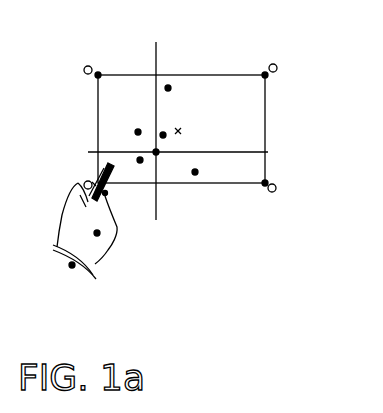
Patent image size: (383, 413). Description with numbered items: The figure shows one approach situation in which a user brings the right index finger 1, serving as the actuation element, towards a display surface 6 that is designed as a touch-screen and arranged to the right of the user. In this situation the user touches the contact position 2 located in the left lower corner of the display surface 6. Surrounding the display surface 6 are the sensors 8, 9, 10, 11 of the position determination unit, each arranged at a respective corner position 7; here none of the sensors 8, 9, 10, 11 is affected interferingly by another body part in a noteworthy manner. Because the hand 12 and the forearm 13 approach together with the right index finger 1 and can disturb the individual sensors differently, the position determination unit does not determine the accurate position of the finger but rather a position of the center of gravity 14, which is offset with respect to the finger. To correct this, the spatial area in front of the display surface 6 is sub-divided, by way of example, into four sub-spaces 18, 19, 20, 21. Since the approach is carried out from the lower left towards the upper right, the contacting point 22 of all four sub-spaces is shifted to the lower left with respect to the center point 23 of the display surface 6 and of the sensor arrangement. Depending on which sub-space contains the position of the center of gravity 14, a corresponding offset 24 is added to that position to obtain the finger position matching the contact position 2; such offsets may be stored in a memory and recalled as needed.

The right index finger 1 is at (105, 193).
The contact position 2 is at (110, 165).
The display surface 6 is at (168, 88).
The corner positions 7 is at (98, 75).
The sensor 8 is at (85, 183).
The sensor 9 is at (85, 67).
The sensor 10 is at (277, 66).
The sensor 11 is at (276, 191).
The hand 12 is at (97, 233).
The forearm 13 is at (72, 265).
The position of the center of gravity 14 is at (82, 200).
The sub-space 18 is at (140, 160).
The sub-space 19 is at (138, 132).
The sub-space 20 is at (163, 135).
The sub-space 21 is at (195, 172).
The contacting point 22 is at (156, 152).
The center point 23 is at (182, 131).
The offset 24 is at (92, 182).